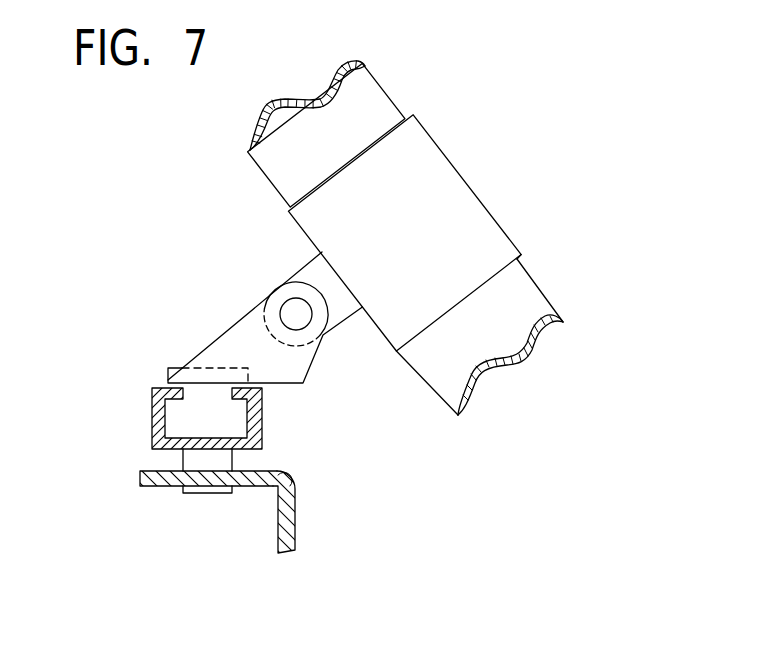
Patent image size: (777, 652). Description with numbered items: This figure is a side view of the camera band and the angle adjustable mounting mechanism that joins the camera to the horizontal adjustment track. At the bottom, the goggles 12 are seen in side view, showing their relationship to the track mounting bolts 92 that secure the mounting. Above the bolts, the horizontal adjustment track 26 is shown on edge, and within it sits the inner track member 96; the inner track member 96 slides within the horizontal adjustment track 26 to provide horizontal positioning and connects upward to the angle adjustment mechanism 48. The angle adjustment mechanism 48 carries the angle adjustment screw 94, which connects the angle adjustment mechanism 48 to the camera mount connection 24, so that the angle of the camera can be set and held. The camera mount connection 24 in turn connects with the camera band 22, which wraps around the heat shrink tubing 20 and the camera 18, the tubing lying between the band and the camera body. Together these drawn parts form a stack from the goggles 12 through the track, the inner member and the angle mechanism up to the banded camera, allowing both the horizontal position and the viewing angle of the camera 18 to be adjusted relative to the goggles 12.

The goggles 12 is at (297, 523).
The camera 18 is at (362, 82).
The heat shrink tubing 20 is at (383, 90).
The camera band 22 is at (443, 227).
The camera mount connection 24 is at (310, 273).
The horizontal adjustment track 26 is at (152, 438).
The angle adjustment mechanism 48 is at (240, 343).
The track mounting bolts 92 is at (202, 462).
The angle adjustment screw 94 is at (296, 314).
The inner track member 96 is at (195, 420).